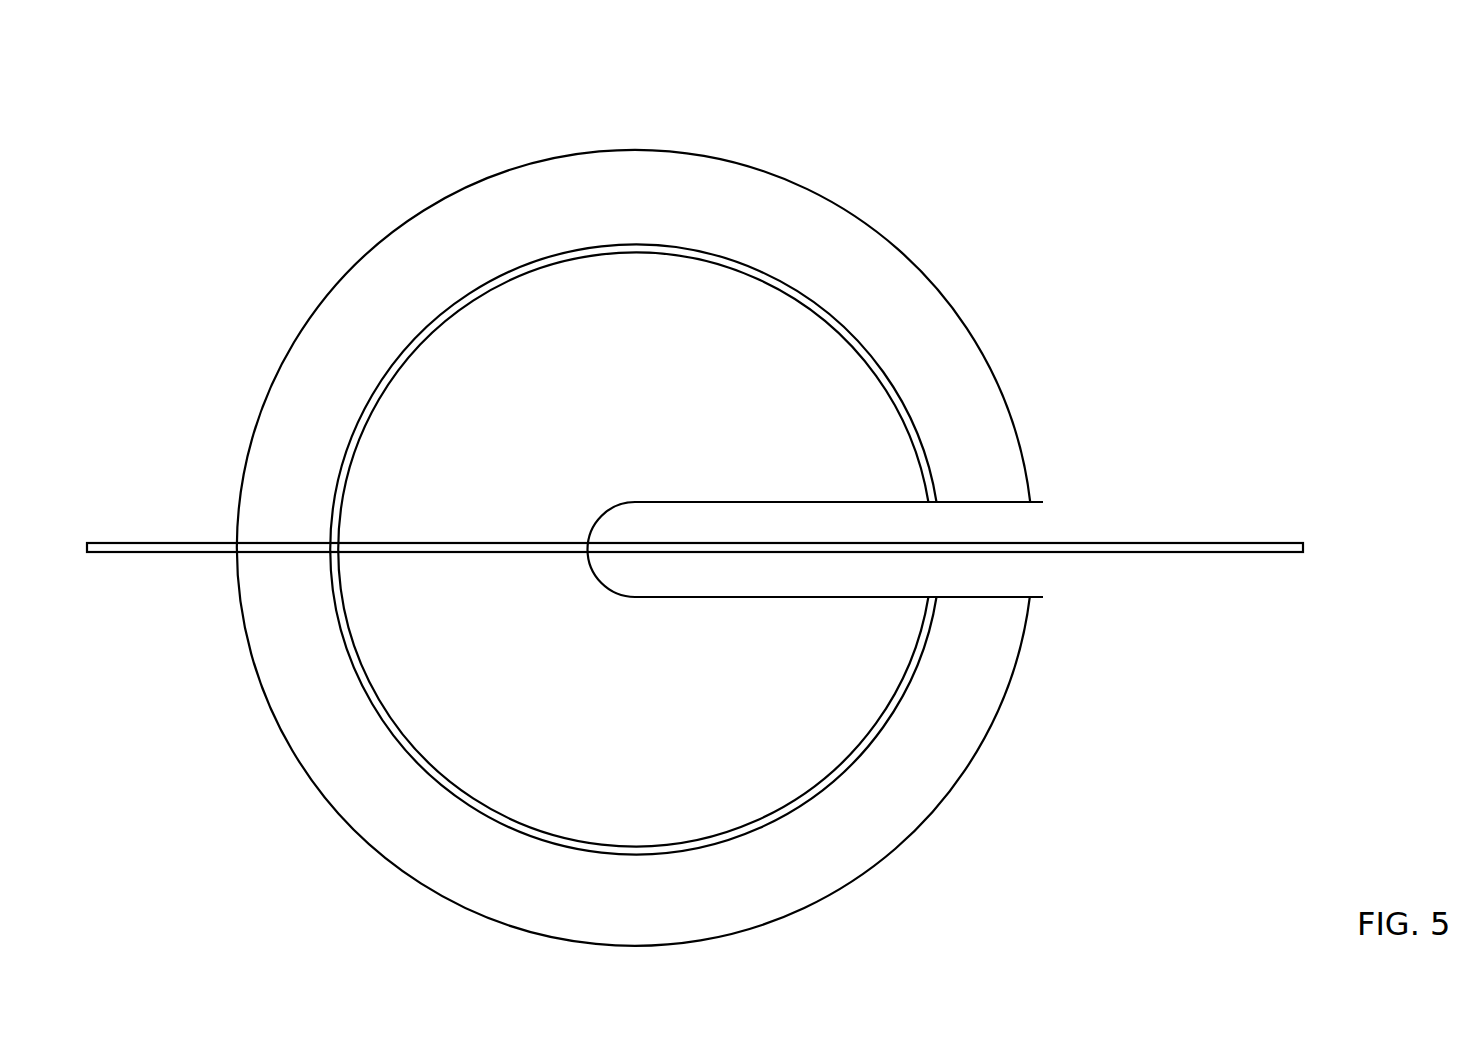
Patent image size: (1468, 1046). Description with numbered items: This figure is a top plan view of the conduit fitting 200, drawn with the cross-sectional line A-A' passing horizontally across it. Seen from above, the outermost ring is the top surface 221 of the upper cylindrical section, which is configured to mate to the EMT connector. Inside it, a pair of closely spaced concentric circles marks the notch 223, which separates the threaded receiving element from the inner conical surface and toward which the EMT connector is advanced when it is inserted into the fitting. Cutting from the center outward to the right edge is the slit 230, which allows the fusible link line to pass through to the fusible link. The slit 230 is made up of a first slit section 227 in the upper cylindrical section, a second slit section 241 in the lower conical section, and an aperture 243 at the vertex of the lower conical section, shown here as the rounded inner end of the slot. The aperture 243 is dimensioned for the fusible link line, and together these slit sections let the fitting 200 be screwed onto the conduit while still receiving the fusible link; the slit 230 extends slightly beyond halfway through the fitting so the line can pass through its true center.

The conduit fitting 200 is at (315, 202).
The top surface 221 is at (917, 342).
The notch 223 is at (663, 243).
The slit 230 is at (1052, 512).
The second slit section 241 is at (790, 502).
The first slit section 227 is at (1000, 593).
The aperture 243 is at (578, 566).